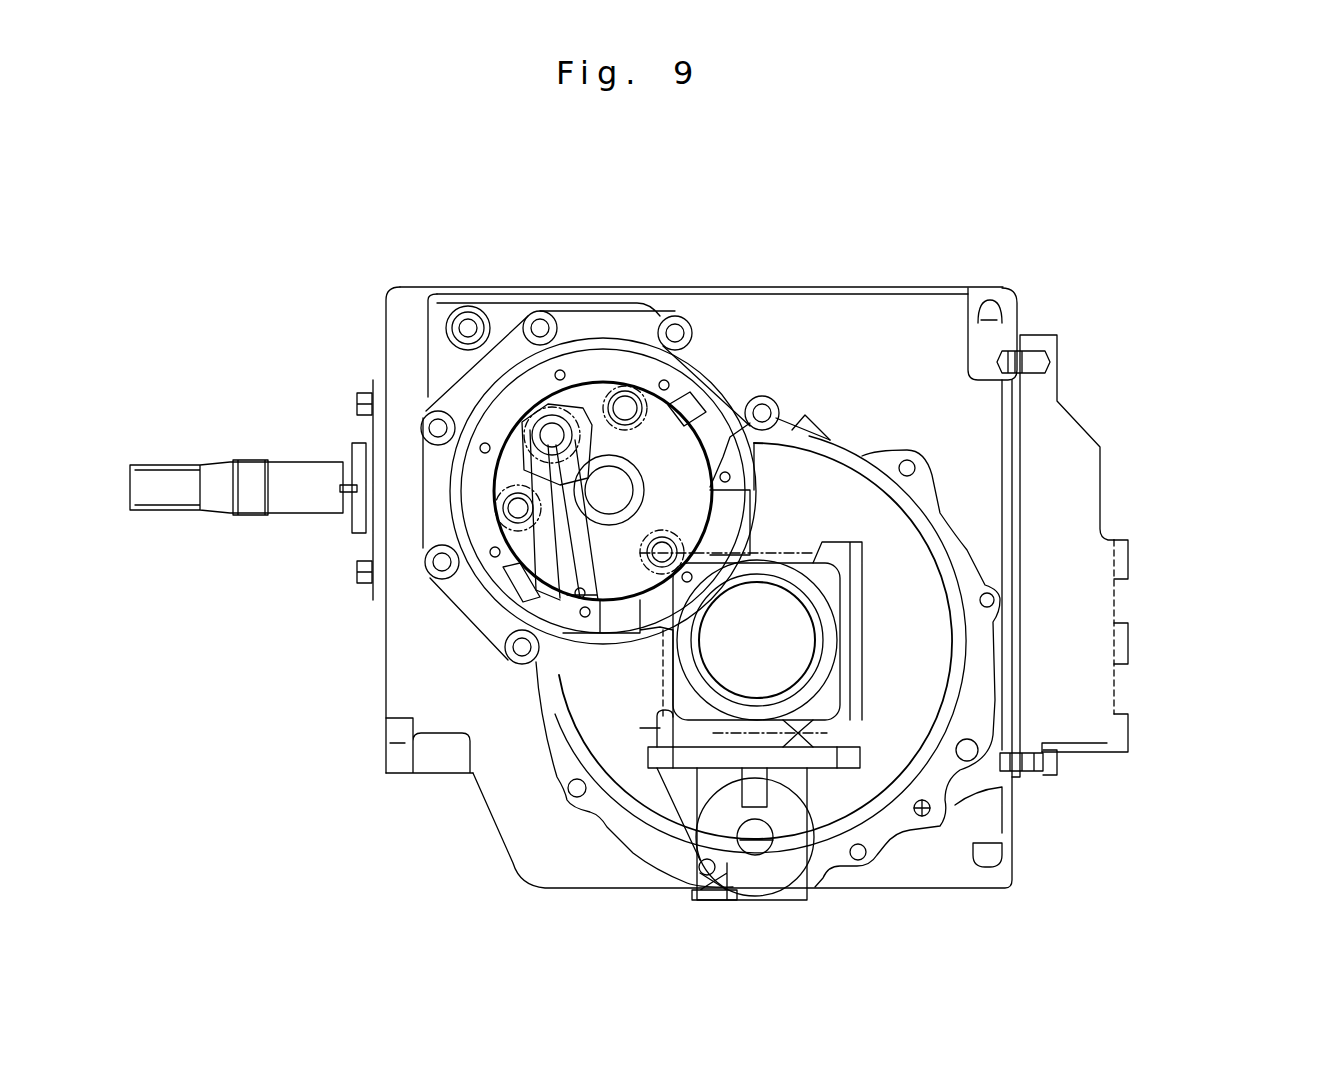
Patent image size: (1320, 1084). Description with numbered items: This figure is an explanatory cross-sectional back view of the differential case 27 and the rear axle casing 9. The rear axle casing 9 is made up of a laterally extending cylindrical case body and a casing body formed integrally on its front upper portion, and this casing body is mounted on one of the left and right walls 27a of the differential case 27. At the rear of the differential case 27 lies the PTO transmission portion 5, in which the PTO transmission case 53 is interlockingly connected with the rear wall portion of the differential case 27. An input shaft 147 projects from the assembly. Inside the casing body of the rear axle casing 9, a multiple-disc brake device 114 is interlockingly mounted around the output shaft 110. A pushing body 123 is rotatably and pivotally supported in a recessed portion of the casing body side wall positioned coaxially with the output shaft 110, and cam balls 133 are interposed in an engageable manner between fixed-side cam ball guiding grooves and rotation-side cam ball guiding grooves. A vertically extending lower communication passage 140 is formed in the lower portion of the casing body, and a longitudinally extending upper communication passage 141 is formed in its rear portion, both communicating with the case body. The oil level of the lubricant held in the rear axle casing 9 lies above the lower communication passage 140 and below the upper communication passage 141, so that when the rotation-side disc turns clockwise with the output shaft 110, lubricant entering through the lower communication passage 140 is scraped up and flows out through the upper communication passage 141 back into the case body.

The PTO transmission portion 5 is at (1120, 446).
The rear axle casing 9 is at (883, 740).
The differential case 27 is at (855, 245).
The left and right walls of the differential case 27a is at (743, 287).
The PTO transmission case 53 is at (1085, 605).
The output shaft 110 is at (612, 487).
The multiple-disc brake device 114 is at (596, 364).
The pushing body 123 is at (688, 452).
The cam ball 133 is at (633, 400).
The lower communication passage 140 is at (622, 625).
The upper communication passage 141 is at (732, 508).
The input shaft 147 is at (162, 480).